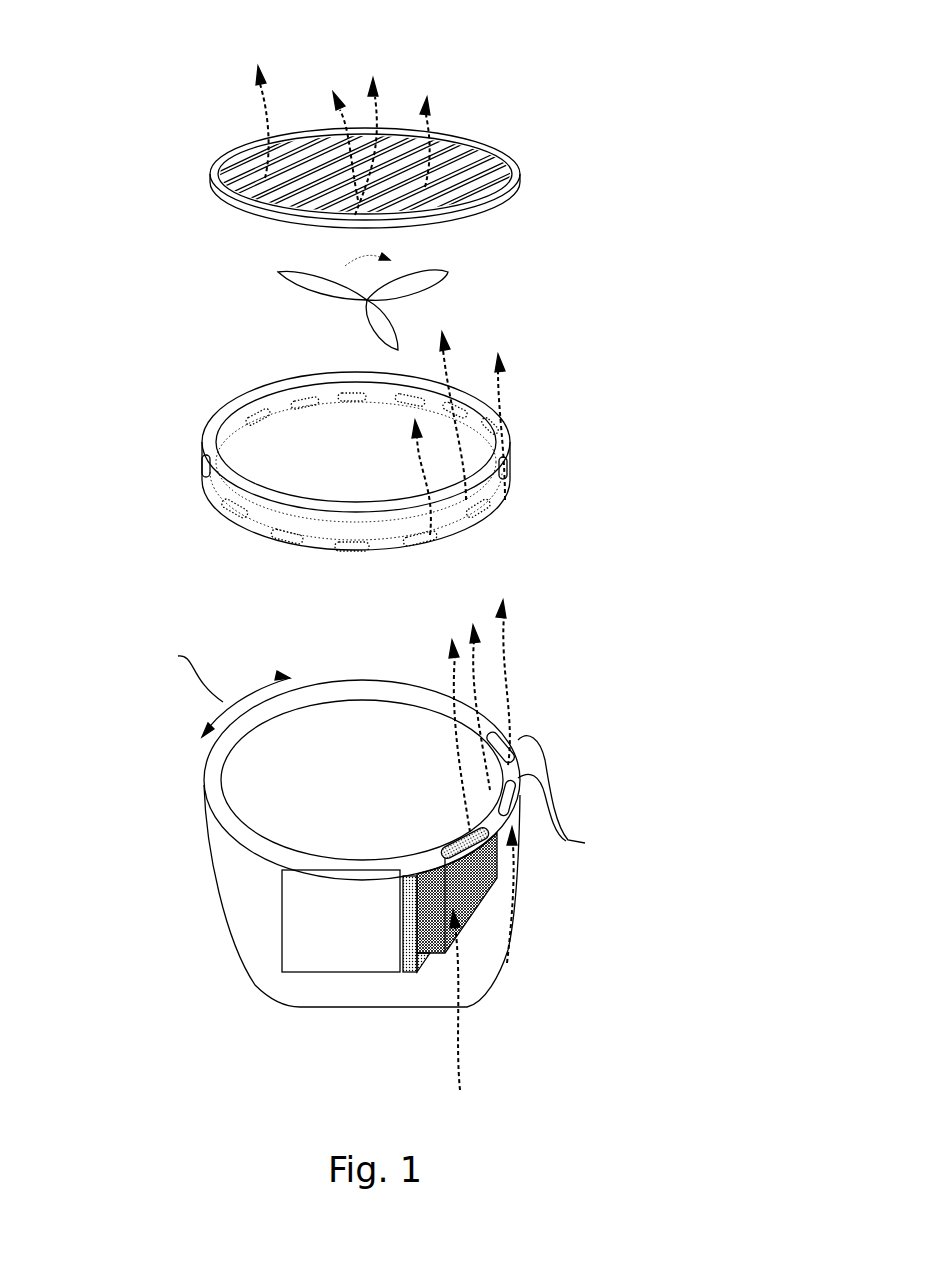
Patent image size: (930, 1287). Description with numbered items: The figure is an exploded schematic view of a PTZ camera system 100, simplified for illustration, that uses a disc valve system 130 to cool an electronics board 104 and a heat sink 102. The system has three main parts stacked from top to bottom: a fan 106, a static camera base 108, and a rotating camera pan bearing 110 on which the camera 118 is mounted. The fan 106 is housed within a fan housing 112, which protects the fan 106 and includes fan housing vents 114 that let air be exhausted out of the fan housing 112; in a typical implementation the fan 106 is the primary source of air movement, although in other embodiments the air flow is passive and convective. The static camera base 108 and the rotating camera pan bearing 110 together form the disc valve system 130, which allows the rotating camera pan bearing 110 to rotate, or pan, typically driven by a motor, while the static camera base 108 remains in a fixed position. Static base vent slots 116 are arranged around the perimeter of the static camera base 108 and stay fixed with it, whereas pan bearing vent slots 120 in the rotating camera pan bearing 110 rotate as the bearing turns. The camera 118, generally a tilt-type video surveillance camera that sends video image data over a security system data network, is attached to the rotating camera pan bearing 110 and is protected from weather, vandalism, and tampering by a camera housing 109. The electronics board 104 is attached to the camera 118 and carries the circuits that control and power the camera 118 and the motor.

The PTZ camera system 100 is at (112, 172).
The heat sink 102 is at (475, 908).
The electronics board 104 is at (407, 972).
The fan 106 is at (281, 279).
The static camera base 108 is at (195, 415).
The camera housing 109 is at (210, 862).
The rotating camera pan bearing 110 is at (198, 760).
The fan housing 112 is at (203, 152).
The fan housing vents 114 is at (489, 172).
The static base vent slots 116 is at (543, 527).
The camera 118 is at (282, 948).
The pan bearing vent slots 120 is at (490, 822).
The disc valve system 130 is at (566, 712).